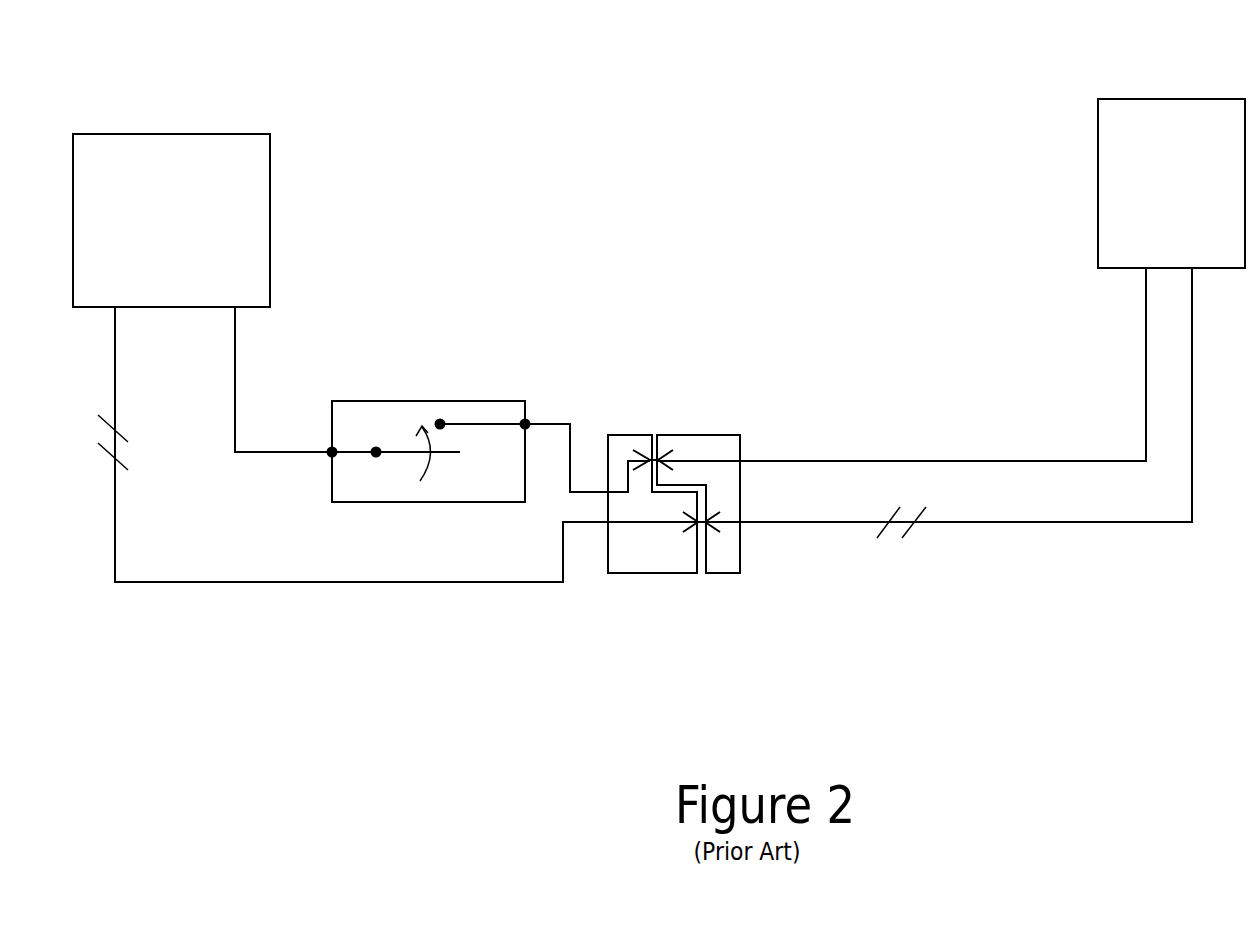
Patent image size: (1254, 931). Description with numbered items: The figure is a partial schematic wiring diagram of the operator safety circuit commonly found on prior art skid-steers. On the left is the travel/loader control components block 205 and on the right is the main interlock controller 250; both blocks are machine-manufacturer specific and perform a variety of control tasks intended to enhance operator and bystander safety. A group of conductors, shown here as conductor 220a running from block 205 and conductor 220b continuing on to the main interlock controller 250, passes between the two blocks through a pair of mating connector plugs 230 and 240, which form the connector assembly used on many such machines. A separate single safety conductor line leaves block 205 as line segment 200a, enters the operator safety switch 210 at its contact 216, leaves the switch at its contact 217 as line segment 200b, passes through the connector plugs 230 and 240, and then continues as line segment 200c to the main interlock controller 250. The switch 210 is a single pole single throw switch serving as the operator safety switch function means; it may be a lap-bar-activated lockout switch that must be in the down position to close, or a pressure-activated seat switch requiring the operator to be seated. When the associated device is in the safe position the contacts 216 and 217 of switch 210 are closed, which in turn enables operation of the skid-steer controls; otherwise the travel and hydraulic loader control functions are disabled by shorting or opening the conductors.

The travel/loader control components block 205 is at (168, 134).
The main interlock controller 250 is at (1173, 98).
The safety conductor line segment 200a is at (235, 378).
The safety conductor line segment 200b is at (553, 422).
The safety conductor line segment 200c is at (942, 460).
The single pole single throw switch 210 is at (372, 401).
The switch contact 216 is at (330, 454).
The switch contact 217 is at (527, 424).
The mating connector plug 230 is at (655, 540).
The mating connector plug 240 is at (712, 460).
The conductor 220a is at (398, 444).
The conductor 220b is at (997, 525).